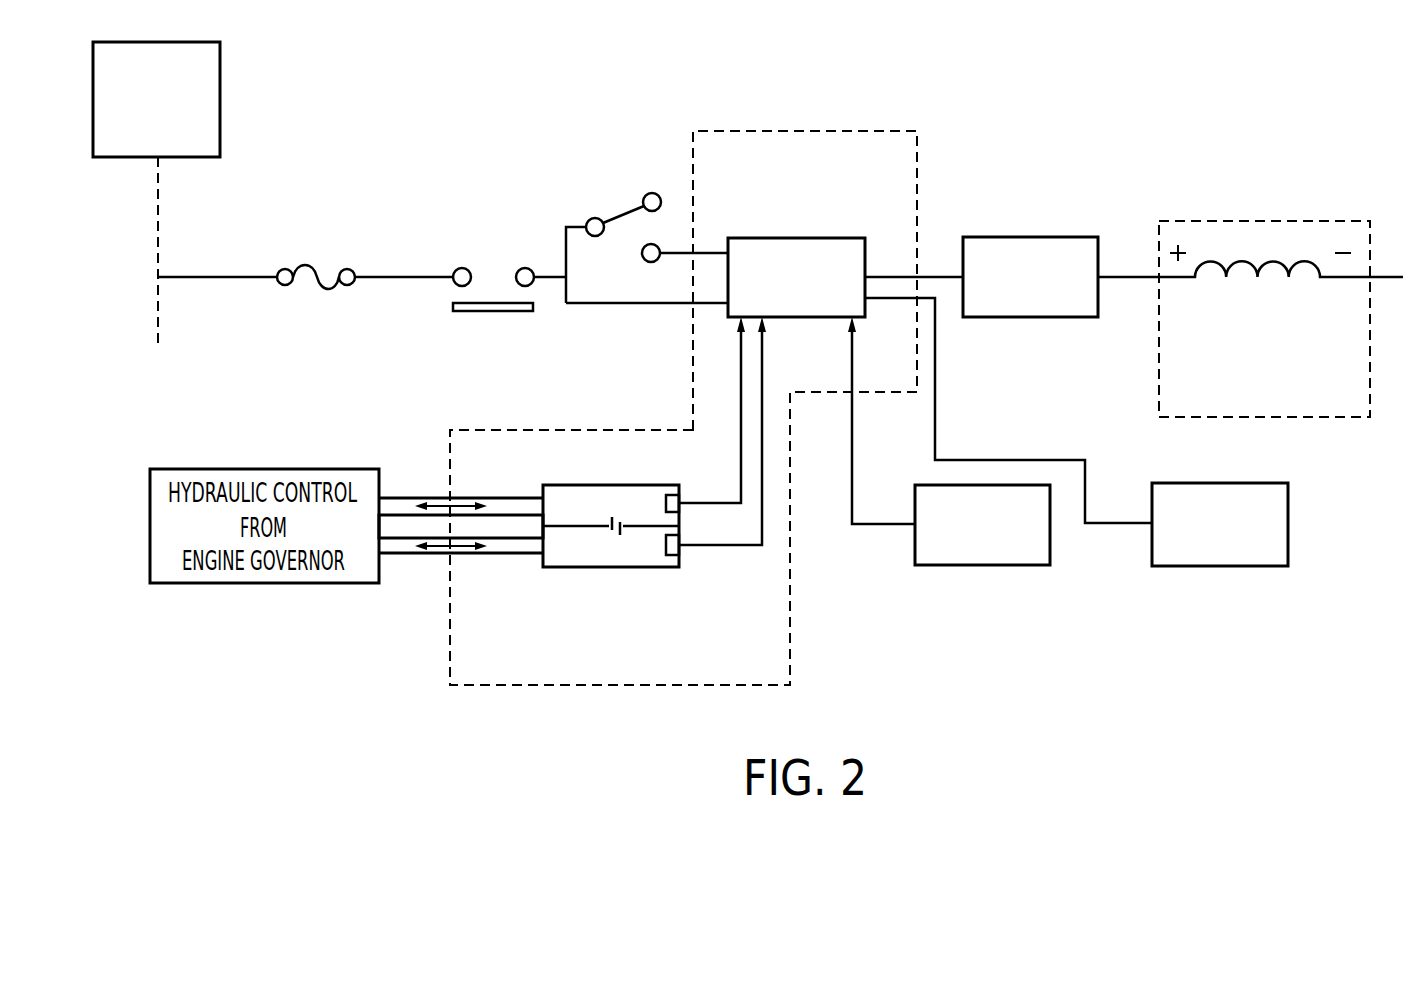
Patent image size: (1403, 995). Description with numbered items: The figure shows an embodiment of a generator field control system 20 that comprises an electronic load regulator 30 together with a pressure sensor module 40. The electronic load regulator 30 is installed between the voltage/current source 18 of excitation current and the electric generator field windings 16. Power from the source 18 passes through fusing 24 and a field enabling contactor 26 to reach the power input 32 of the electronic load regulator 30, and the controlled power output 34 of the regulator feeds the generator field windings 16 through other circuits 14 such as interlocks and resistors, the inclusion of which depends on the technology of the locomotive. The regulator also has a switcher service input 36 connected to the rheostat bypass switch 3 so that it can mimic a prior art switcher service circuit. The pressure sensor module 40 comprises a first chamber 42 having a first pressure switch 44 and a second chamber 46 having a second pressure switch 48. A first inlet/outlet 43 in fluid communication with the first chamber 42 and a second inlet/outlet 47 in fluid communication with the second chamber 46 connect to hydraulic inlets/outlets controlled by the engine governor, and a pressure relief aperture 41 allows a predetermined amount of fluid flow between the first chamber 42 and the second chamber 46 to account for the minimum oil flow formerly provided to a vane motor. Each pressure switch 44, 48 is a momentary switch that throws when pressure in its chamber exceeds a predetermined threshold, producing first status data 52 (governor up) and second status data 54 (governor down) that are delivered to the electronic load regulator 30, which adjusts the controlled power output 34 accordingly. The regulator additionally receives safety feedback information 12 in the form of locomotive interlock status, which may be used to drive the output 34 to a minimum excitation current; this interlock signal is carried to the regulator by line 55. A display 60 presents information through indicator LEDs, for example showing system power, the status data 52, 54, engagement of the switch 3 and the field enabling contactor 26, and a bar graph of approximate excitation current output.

The rheostat bypass switch 3 is at (622, 215).
The safety feedback information 12 is at (983, 566).
The other circuits 14 is at (1030, 344).
The generator field windings 16 is at (1272, 220).
The voltage/current source 18 is at (220, 80).
The generator field control system 20 is at (840, 131).
The fusing 24 is at (308, 236).
The field enabling contactor 26 is at (488, 250).
The electronic load regulator 30 is at (796, 277).
The power input 32 is at (710, 303).
The controlled power output 34 is at (878, 273).
The switcher service input 36 is at (712, 250).
The pressure sensor module 40 is at (644, 520).
The pressure relief aperture 41 is at (615, 520).
The first chamber 42 is at (543, 487).
The first inlet/outlet 43 is at (512, 500).
The first pressure switch 44 is at (668, 495).
The second chamber 46 is at (543, 528).
The second inlet/outlet 47 is at (507, 556).
The second pressure switch 48 is at (682, 540).
The first status data 52 is at (740, 428).
The second status data 54 is at (762, 431).
The interlock status signal line 55 is at (852, 368).
The display 60 is at (1220, 546).